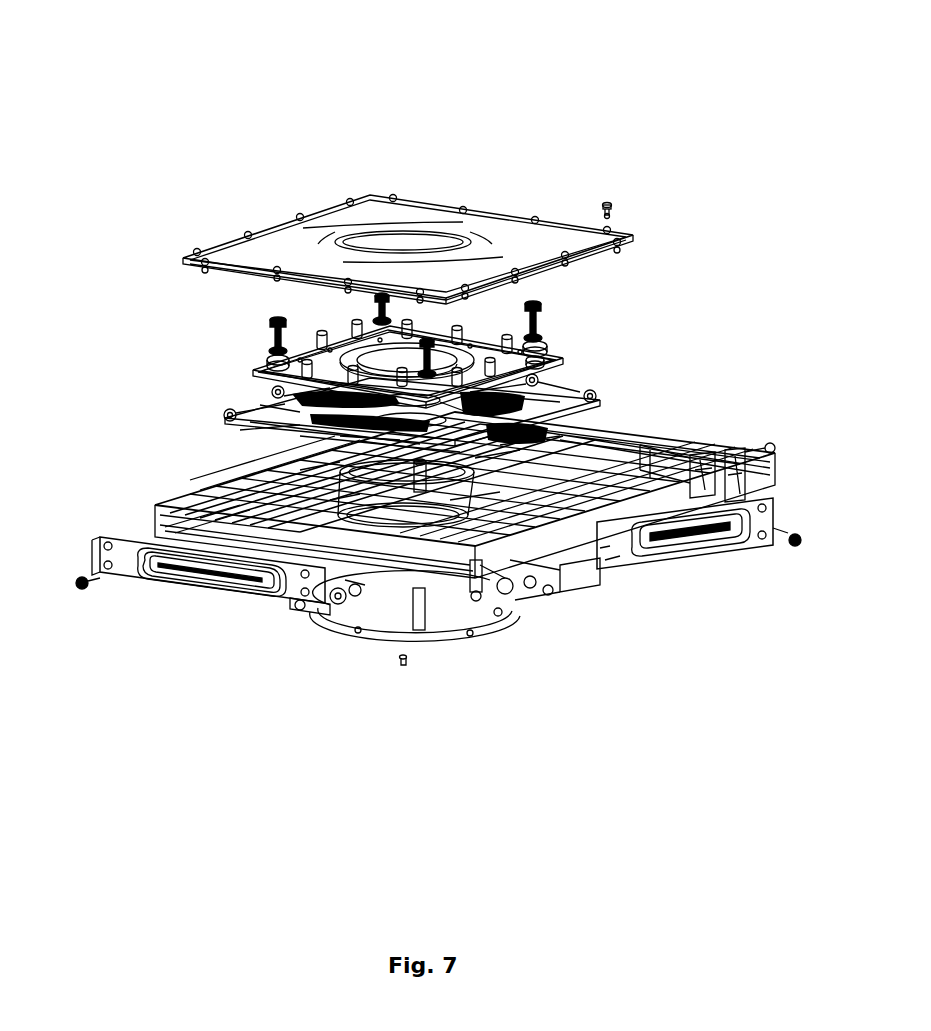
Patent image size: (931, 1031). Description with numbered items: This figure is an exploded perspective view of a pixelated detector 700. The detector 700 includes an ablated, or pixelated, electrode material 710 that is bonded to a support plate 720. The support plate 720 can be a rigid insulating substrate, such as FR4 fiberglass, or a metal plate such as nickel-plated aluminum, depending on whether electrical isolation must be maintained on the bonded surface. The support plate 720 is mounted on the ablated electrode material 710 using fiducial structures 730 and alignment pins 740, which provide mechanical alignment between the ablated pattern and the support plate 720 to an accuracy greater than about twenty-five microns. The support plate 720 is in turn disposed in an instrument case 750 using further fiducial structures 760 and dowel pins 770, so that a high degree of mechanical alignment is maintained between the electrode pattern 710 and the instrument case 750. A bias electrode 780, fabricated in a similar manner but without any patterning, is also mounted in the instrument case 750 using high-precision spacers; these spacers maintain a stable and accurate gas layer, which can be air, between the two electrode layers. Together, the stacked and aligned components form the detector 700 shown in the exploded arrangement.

The pixelated detector 700 is at (359, 80).
The ablated electrode material 710 is at (243, 383).
The support plate 720 is at (252, 338).
The fiducial structures 730 is at (551, 347).
The alignment pins 740 is at (551, 317).
The instrument case 750 is at (479, 172).
The fiducial structures 760 is at (542, 202).
The dowel pins 770 is at (627, 205).
The bias electrode 780 is at (408, 532).